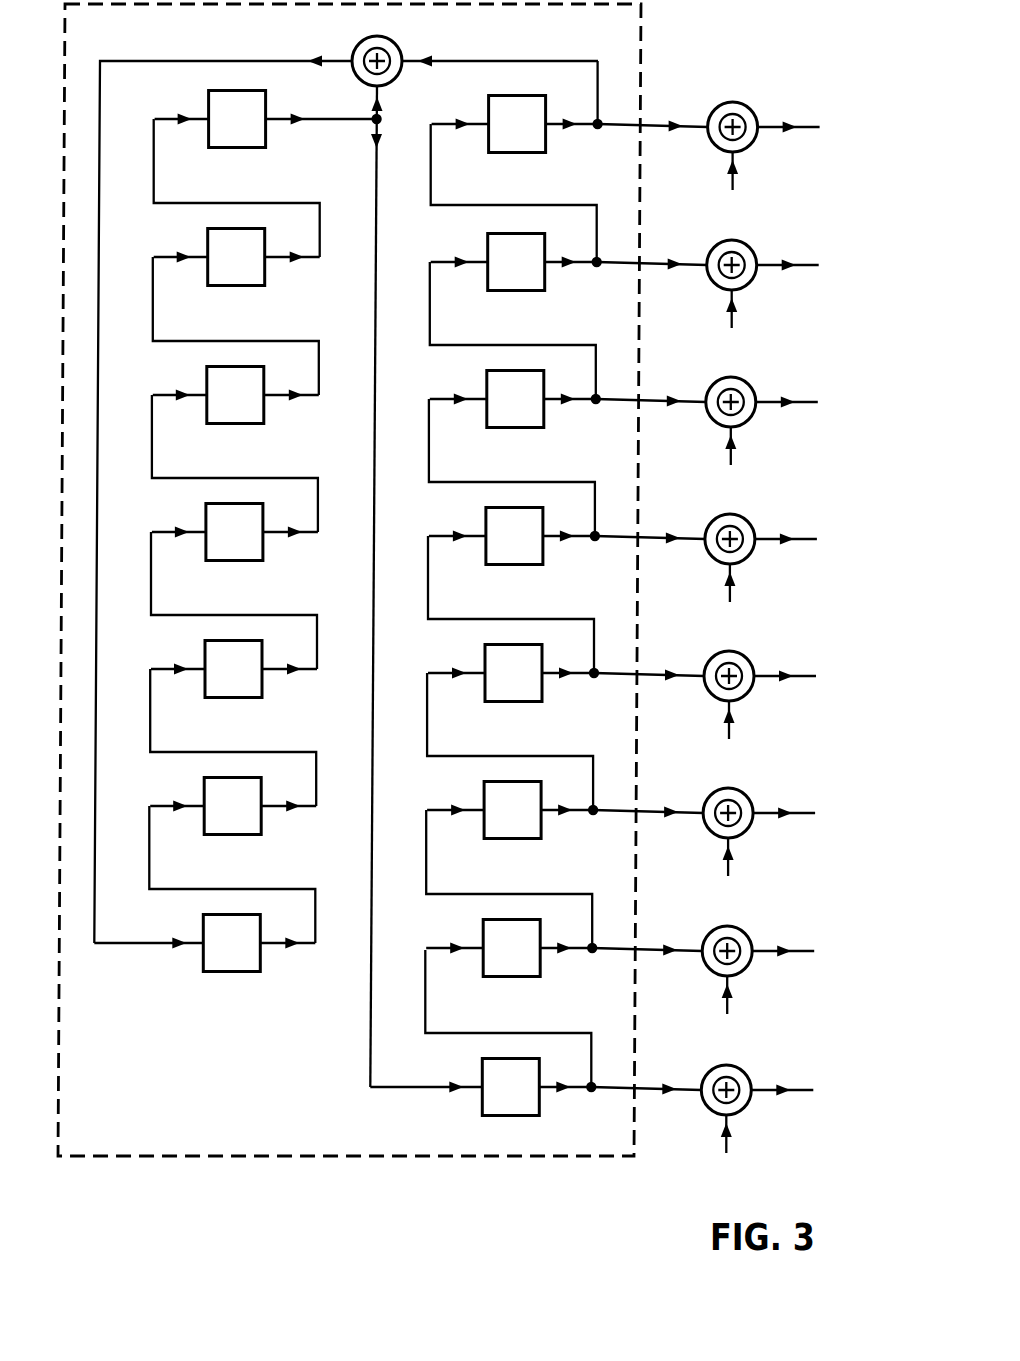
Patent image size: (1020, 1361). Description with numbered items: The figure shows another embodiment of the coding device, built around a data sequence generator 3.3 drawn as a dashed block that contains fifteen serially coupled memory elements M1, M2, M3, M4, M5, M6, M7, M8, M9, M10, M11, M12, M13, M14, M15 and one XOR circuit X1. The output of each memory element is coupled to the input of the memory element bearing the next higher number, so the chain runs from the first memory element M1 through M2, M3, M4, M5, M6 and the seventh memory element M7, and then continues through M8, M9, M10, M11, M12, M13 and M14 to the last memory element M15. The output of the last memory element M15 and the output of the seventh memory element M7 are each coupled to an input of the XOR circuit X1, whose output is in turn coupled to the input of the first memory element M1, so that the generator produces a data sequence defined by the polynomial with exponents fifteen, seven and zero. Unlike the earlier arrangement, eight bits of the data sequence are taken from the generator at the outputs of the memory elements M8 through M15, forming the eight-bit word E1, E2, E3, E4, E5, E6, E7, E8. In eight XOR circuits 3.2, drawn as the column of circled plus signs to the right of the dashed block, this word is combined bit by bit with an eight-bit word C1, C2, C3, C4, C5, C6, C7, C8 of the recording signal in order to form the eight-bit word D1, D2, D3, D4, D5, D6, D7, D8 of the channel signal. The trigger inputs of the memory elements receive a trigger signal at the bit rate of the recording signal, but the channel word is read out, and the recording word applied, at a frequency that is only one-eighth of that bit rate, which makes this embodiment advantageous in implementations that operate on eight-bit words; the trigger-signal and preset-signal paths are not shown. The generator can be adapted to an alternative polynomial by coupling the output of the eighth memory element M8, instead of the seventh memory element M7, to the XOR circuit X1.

The data sequence generator 3.3 is at (643, 17).
The XOR circuits 3.2 is at (757, 592).
The XOR circuit X1 is at (399, 47).
The first memory element M1 is at (204, 889).
The memory element M2 is at (233, 752).
The memory element M3 is at (234, 615).
The memory element M4 is at (235, 478).
The memory element M5 is at (236, 340).
The memory element M6 is at (237, 202).
The seventh memory element M7 is at (266, 119).
The eighth memory element M8 is at (482, 1033).
The memory element M9 is at (511, 893).
The memory element M10 is at (512, 756).
The memory element M11 is at (513, 619).
The memory element M12 is at (514, 482).
The memory element M13 is at (515, 345).
The memory element M14 is at (516, 207).
The last memory element M15 is at (517, 107).
The data sequence bit E1 is at (646, 1059).
The data sequence bit E2 is at (647, 920).
The data sequence bit E3 is at (648, 782).
The data sequence bit E4 is at (649, 645).
The data sequence bit E5 is at (650, 508).
The data sequence bit E6 is at (651, 371).
The data sequence bit E7 is at (652, 234).
The data sequence bit E8 is at (653, 96).
The recording signal bit C1 is at (700, 1136).
The recording signal bit C2 is at (701, 997).
The recording signal bit C3 is at (702, 859).
The recording signal bit C4 is at (703, 722).
The recording signal bit C5 is at (704, 585).
The recording signal bit C6 is at (705, 448).
The recording signal bit C7 is at (706, 311).
The recording signal bit C8 is at (707, 173).
The channel signal bit D1 is at (787, 1122).
The channel signal bit D2 is at (788, 983).
The channel signal bit D3 is at (789, 845).
The channel signal bit D4 is at (790, 708).
The channel signal bit D5 is at (791, 571).
The channel signal bit D6 is at (792, 434).
The channel signal bit D7 is at (793, 297).
The channel signal bit D8 is at (794, 159).